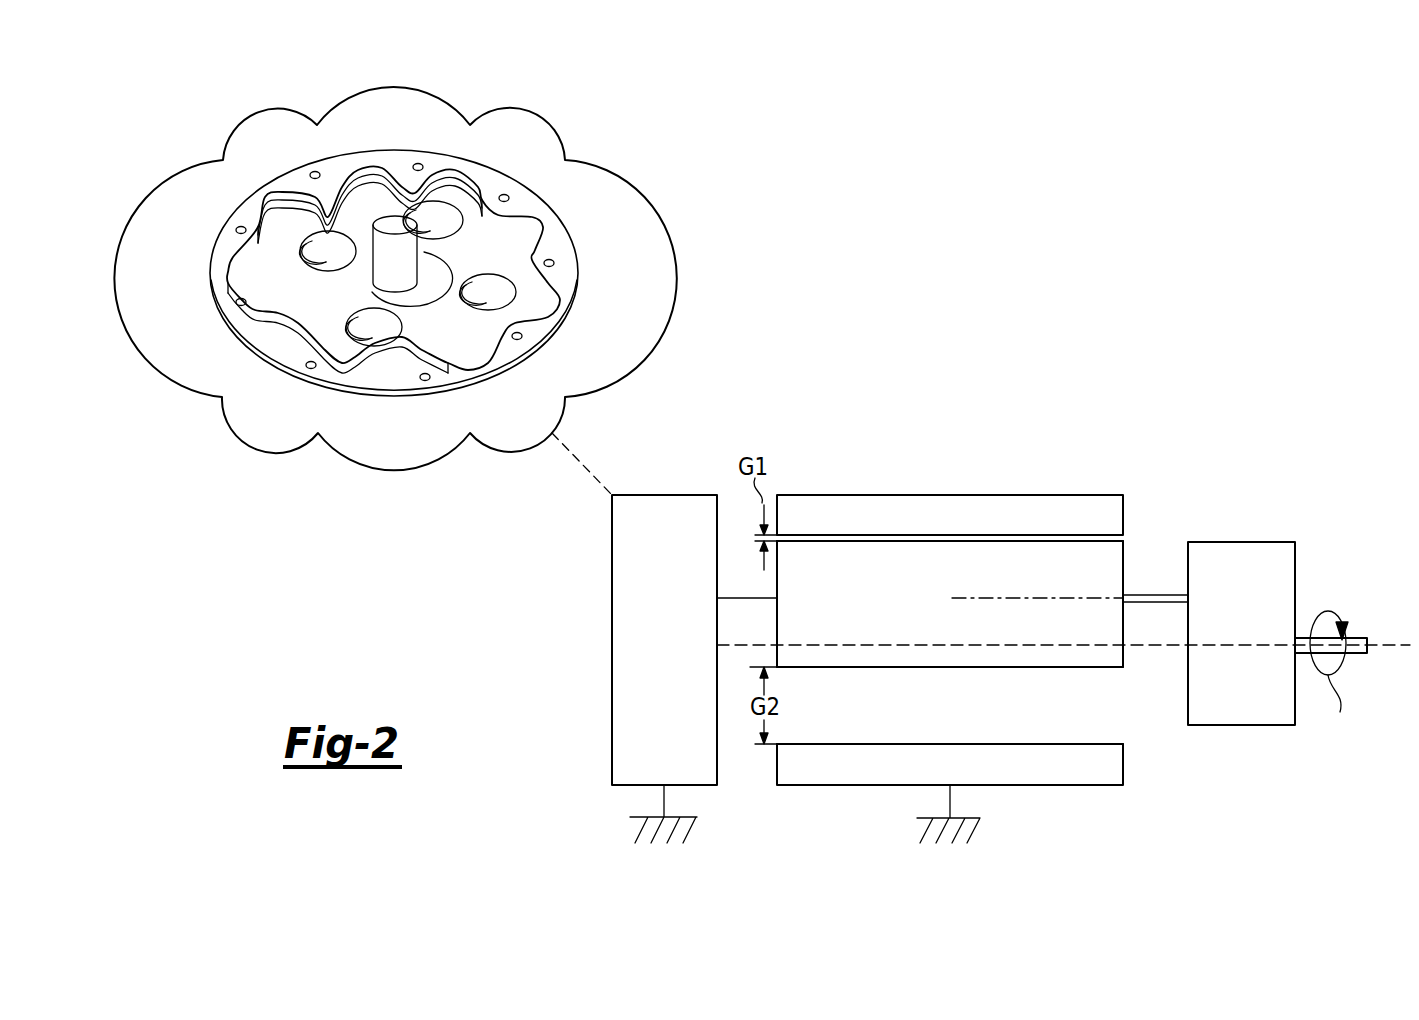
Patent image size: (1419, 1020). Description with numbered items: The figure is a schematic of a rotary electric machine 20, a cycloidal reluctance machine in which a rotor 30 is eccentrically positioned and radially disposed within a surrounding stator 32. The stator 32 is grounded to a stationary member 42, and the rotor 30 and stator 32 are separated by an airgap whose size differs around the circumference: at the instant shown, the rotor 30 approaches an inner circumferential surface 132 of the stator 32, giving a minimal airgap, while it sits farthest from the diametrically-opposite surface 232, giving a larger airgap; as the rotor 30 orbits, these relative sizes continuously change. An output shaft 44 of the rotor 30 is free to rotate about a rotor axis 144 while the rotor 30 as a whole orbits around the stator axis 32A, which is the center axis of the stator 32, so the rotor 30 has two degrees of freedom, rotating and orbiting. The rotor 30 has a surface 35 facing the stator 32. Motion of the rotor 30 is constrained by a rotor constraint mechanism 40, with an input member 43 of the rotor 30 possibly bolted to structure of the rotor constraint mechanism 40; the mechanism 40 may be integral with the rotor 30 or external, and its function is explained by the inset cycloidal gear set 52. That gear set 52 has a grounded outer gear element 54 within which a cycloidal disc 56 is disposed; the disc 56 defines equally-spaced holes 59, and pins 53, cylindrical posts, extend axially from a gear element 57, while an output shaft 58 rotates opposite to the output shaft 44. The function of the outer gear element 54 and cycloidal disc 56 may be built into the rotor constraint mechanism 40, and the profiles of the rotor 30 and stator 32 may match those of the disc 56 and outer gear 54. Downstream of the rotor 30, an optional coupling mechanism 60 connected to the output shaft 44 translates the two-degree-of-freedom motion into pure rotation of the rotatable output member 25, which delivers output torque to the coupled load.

The rotary electric machine 20 is at (1112, 372).
The rotatable output member 25 is at (1350, 636).
The rotor 30 is at (859, 610).
The stator 32 is at (1059, 527).
The stator axis 32A is at (1150, 648).
The rotor outer surface 35 is at (1017, 667).
The rotor constraint mechanism 40 is at (611, 585).
The stationary member 42 is at (623, 830).
The input member 43 is at (745, 597).
The output shaft 44 is at (1155, 595).
The cycloidal gear set 52 is at (633, 163).
The pins 53 is at (355, 330).
The outer gear element 54 is at (303, 178).
The cycloidal disc 56 is at (282, 310).
The gear element 57 is at (512, 293).
The output shaft 58 is at (399, 192).
The holes 59 is at (400, 333).
The coupling mechanism 60 is at (1257, 542).
The inner circumferential surface 132 is at (1100, 540).
The rotor axis 144 is at (1005, 598).
The diametrically-opposite surface 232 is at (1100, 745).